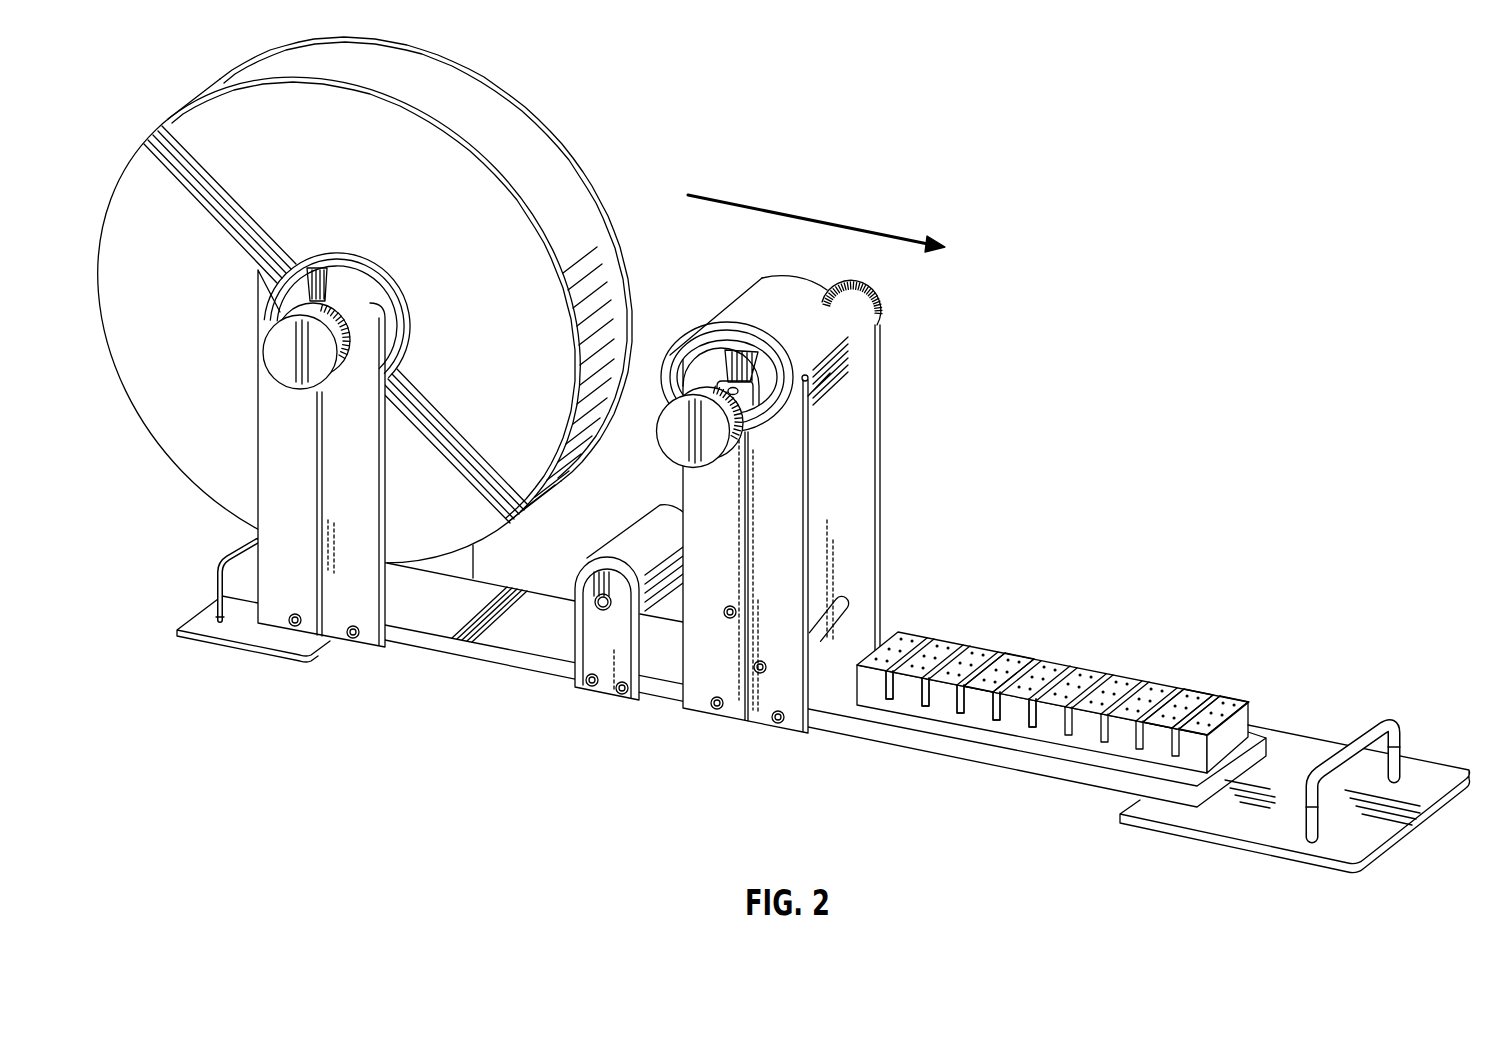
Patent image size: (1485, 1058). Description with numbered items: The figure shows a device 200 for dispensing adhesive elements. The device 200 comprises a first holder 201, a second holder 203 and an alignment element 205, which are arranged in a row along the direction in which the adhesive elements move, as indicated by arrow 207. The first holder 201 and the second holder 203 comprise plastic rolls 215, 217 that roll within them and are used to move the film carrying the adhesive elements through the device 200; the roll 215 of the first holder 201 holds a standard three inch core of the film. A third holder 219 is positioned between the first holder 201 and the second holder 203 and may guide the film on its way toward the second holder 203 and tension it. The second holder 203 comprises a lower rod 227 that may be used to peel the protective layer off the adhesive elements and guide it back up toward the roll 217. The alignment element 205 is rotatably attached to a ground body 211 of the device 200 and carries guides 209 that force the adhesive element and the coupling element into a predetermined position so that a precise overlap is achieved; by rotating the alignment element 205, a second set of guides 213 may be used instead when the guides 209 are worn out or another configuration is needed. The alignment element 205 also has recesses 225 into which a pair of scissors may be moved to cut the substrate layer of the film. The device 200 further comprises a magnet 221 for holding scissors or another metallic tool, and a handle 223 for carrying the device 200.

The device 200 is at (735, 436).
The first holder 201 is at (270, 510).
The second holder 203 is at (864, 433).
The alignment element 205 is at (1093, 678).
The arrow 207 is at (817, 218).
The guides 209 is at (973, 650).
The ground body 211 is at (398, 637).
The second set of guides 213 is at (1227, 697).
The plastic roll 215 is at (272, 345).
The plastic roll 217 is at (682, 447).
The third holder 219 is at (588, 608).
The magnet 221 is at (1310, 748).
The handle 223 is at (1395, 722).
The recesses 225 is at (1032, 728).
The lower rod 227 is at (840, 612).